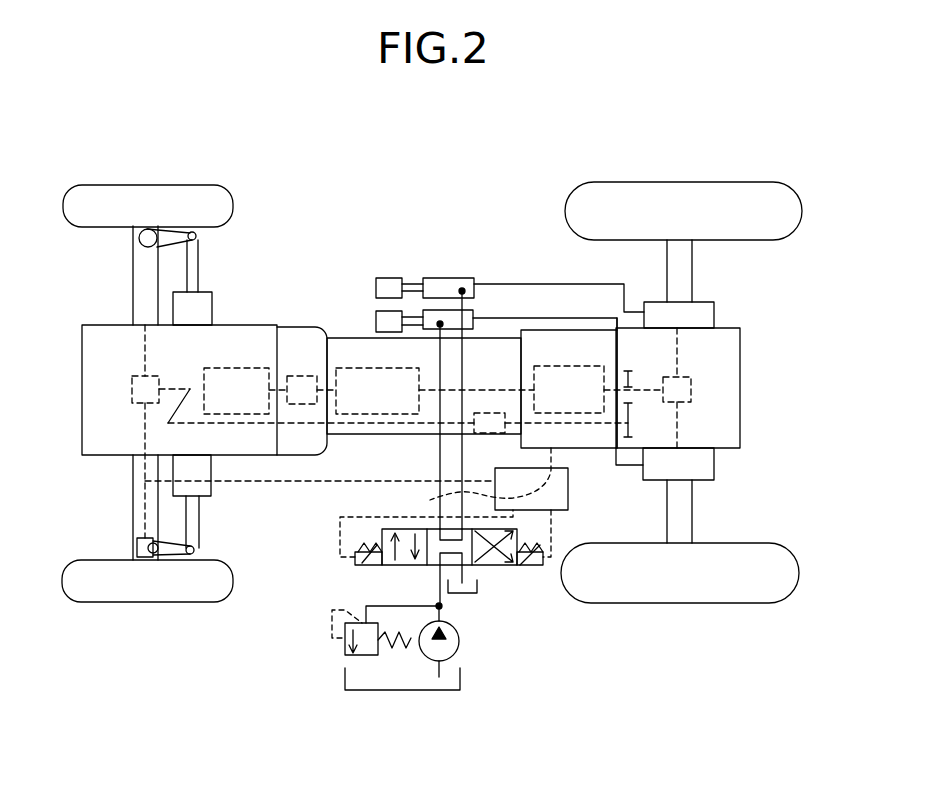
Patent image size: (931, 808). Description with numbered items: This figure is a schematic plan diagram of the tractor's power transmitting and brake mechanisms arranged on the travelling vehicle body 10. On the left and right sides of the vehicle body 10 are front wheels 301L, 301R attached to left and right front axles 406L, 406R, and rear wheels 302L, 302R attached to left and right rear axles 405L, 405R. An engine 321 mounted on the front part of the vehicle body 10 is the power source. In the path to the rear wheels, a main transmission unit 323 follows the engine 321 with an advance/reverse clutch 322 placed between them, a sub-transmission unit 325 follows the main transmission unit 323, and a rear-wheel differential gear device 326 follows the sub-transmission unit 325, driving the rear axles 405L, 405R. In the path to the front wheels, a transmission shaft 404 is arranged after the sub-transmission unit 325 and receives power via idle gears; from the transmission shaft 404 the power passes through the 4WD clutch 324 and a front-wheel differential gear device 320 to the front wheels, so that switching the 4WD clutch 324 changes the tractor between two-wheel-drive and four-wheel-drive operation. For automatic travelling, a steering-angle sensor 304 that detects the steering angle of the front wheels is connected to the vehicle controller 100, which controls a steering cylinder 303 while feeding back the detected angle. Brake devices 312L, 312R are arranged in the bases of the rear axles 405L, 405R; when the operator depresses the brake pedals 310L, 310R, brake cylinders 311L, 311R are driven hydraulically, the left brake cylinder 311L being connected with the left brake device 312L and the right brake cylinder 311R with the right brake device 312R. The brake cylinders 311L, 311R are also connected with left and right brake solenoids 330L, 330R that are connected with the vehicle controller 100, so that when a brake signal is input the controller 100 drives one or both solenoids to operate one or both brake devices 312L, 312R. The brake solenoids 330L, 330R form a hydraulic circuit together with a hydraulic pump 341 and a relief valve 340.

The travelling vehicle body 10 is at (78, 375).
The vehicle controller 100 is at (568, 492).
The right front wheel 301R is at (150, 185).
The left front wheel 301L is at (147, 602).
The right rear wheel 302R is at (745, 240).
The left rear wheel 302L is at (742, 603).
The steering cylinder 303 is at (212, 311).
The steering-angle sensor 304 is at (138, 538).
The right brake pedal 310R is at (392, 278).
The left brake pedal 310L is at (376, 320).
The right brake cylinder 311R is at (463, 267).
The left brake cylinder 311L is at (474, 307).
The right brake device 312R is at (714, 316).
The left brake device 312L is at (714, 458).
The front-wheel differential gear device 320 is at (137, 376).
The engine 321 is at (240, 368).
The advance/reverse clutch 322 is at (302, 376).
The main transmission unit 323 is at (387, 414).
The 4WD clutch 324 is at (487, 433).
The sub-transmission unit 325 is at (567, 413).
The rear-wheel differential gear device 326 is at (692, 390).
The left brake solenoid 330L is at (355, 565).
The right brake solenoid 330R is at (527, 565).
The relief valve 340 is at (345, 645).
The hydraulic pump 341 is at (460, 647).
The transmission shaft 404 is at (445, 502).
The right rear axle 405R is at (667, 268).
The left rear axle 405L is at (692, 514).
The right front axle 406R is at (133, 265).
The left front axle 406L is at (133, 547).